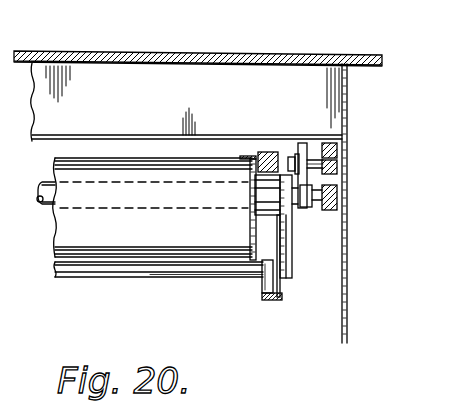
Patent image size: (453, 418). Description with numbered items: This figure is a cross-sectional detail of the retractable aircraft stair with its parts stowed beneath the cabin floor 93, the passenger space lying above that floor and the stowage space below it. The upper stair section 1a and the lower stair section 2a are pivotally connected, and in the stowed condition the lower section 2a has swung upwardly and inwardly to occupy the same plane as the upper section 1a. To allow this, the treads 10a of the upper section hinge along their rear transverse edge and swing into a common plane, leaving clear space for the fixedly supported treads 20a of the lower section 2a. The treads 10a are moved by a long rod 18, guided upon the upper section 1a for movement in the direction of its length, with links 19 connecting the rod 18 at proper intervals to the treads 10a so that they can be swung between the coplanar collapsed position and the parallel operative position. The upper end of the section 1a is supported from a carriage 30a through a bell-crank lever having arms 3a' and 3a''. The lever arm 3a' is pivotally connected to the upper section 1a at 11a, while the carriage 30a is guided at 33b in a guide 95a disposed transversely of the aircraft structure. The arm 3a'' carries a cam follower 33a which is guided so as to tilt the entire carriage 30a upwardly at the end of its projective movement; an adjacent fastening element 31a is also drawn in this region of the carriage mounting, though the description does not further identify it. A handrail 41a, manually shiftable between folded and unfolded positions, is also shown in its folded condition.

The floor 93 is at (133, 52).
The treads 20a is at (143, 171).
The treads 10a is at (148, 278).
The links 19 is at (213, 279).
The long rod 18 is at (262, 290).
The lower stair section 2a is at (247, 153).
The handrail 41a is at (270, 151).
The carriage 30a is at (297, 153).
The carriage guide point 33b is at (348, 152).
The guide 95a is at (340, 170).
The lower bolt 31a is at (340, 193).
The cam follower 33a is at (340, 212).
The lever arm 3a'' is at (321, 211).
The lever arm 3a' is at (308, 246).
The pivot connection 11a is at (293, 273).
The upper stair section 1a is at (284, 297).